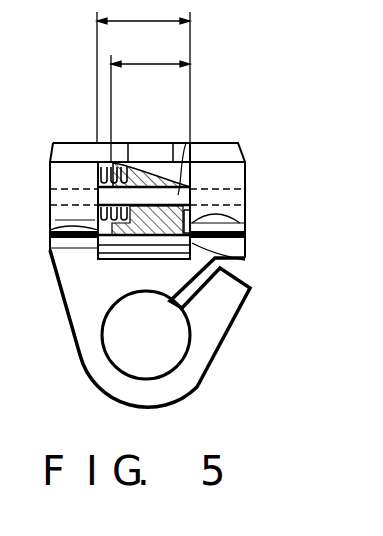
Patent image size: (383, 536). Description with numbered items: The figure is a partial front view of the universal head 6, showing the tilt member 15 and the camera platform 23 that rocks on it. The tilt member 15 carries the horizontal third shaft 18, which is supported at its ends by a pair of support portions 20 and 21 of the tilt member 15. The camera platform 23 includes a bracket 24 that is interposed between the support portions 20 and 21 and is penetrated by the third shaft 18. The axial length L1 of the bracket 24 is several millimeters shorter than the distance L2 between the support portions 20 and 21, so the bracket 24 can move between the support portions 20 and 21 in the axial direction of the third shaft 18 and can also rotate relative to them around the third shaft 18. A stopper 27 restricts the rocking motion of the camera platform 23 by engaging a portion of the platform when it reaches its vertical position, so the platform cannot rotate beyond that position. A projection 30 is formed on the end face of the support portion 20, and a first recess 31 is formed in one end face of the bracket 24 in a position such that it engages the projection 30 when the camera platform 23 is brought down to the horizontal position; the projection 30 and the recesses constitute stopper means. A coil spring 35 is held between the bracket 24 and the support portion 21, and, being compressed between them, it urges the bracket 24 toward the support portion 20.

The universal head 6 is at (265, 191).
The tilt member 15 is at (73, 330).
The third shaft 18 is at (186, 143).
The support portion 20 is at (235, 172).
The support portion 21 is at (58, 175).
The camera platform 23 is at (78, 147).
The bracket 24 is at (146, 172).
The stopper 27 is at (98, 244).
The projection 30 is at (245, 225).
The first recess 31 is at (245, 258).
The coil spring 35 is at (50, 230).
The axial length of bracket L1 is at (150, 102).
The distance between support portions L2 is at (143, 71).